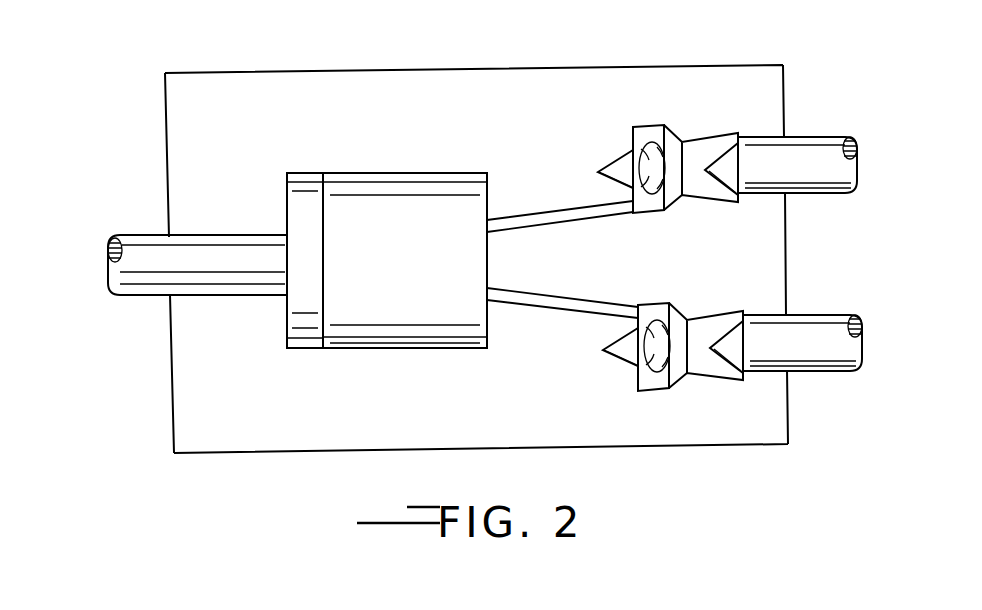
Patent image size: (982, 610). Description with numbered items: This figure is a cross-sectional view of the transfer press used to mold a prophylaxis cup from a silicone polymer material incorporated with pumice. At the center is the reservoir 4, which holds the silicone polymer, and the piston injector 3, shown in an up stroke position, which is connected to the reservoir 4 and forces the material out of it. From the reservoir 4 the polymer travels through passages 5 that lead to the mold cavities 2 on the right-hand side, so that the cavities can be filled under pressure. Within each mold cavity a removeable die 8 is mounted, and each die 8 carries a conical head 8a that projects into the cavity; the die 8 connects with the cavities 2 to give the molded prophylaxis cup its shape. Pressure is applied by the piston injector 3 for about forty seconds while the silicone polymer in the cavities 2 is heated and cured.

The mold cavities 2 is at (689, 133).
The piston injector 3 is at (305, 178).
The reservoir 4 is at (390, 187).
The passages 5 is at (547, 210).
The removeable die 8 is at (813, 187).
The conical head 8a is at (725, 160).